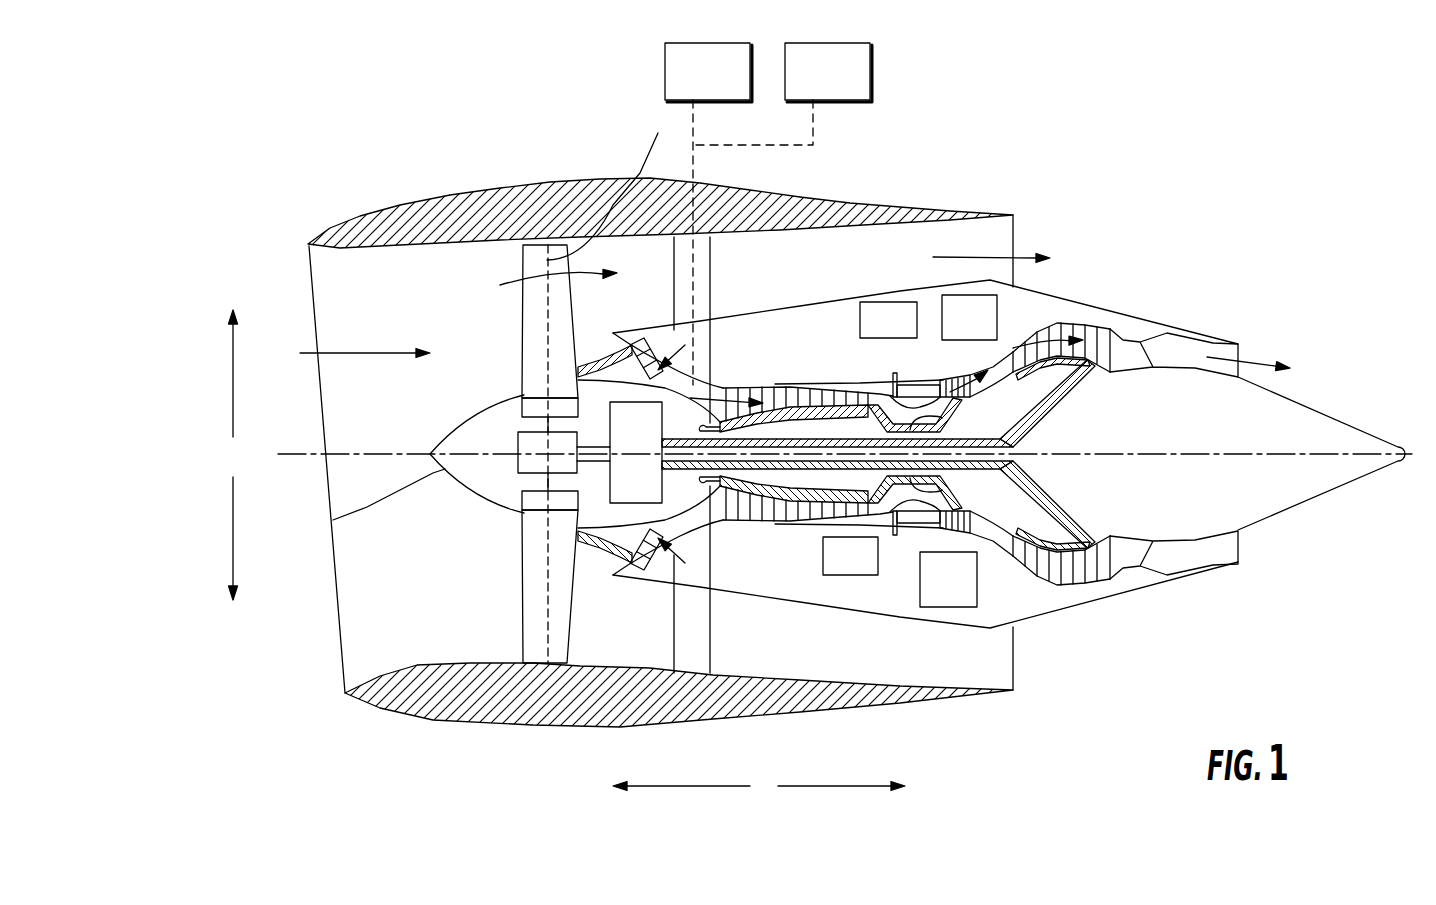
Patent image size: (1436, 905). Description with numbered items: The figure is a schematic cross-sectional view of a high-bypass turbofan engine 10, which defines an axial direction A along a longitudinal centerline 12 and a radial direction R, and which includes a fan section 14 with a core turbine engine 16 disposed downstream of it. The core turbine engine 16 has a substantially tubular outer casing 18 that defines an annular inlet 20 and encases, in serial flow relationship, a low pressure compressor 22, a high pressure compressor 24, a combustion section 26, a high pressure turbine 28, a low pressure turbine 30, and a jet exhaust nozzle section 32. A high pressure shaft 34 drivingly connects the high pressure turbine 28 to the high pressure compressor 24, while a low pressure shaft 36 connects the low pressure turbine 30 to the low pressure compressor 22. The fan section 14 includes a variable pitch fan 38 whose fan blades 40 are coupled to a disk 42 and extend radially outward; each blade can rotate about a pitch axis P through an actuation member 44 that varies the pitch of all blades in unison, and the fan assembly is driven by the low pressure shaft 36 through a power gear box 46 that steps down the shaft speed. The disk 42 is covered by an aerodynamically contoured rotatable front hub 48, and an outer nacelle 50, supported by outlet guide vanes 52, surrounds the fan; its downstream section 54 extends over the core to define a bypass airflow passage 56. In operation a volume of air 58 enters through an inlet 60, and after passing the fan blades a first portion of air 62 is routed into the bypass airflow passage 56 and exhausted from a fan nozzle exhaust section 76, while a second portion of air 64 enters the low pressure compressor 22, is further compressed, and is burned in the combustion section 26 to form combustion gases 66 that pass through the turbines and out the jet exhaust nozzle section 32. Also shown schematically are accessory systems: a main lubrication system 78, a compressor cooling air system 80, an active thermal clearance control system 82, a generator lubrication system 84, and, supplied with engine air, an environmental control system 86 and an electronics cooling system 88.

The turbofan engine 10 is at (1157, 200).
The longitudinal centerline 12 is at (1180, 453).
The fan section 14 is at (478, 256).
The core turbine engine 16 is at (830, 323).
The outer casing 18 is at (870, 620).
The annular inlet 20 is at (613, 557).
The low pressure compressor 22 is at (672, 518).
The high pressure compressor 24 is at (740, 524).
The combustion section 26 is at (910, 536).
The high pressure turbine 28 is at (989, 525).
The low pressure turbine 30 is at (1095, 594).
The jet exhaust nozzle section 32 is at (1162, 575).
The high pressure shaft 34 is at (938, 418).
The low pressure shaft 36 is at (1050, 410).
The variable pitch fan 38 is at (476, 513).
The fan blades 40 is at (520, 603).
The disk 42 is at (527, 407).
The actuation member 44 is at (517, 433).
The power gear box 46 is at (645, 418).
The front hub 48 is at (333, 520).
The outer nacelle 50 is at (568, 728).
The outlet guide vanes 52 is at (713, 263).
The downstream section 54 is at (958, 210).
The bypass airflow passage 56 is at (870, 272).
The volume of air 58 is at (360, 353).
The inlet 60 is at (342, 668).
The first portion of air 62 is at (538, 282).
The second portion of air 64 is at (603, 345).
The combustion gases 66 is at (965, 388).
The fan nozzle exhaust section 76 is at (1002, 242).
The main lubrication system 78 is at (978, 595).
The compressor cooling air system 80 is at (843, 577).
The active thermal clearance control system 82 is at (947, 295).
The generator lubrication system 84 is at (884, 302).
The environmental control system 86 is at (713, 43).
The electronics cooling system 88 is at (837, 43).